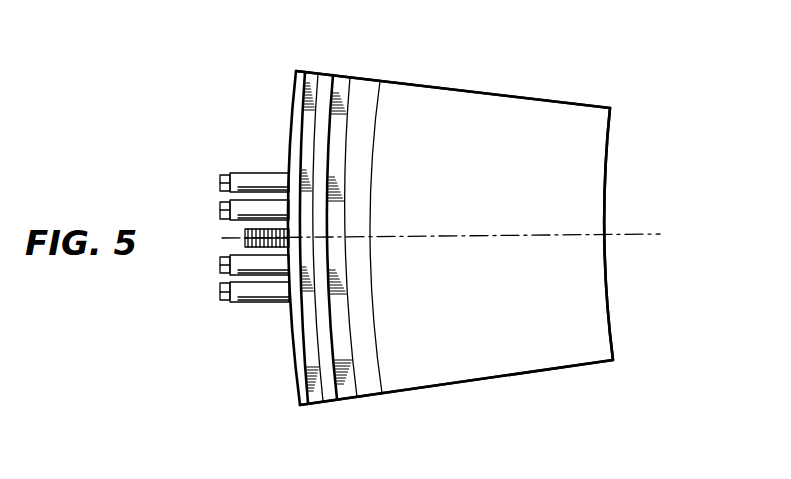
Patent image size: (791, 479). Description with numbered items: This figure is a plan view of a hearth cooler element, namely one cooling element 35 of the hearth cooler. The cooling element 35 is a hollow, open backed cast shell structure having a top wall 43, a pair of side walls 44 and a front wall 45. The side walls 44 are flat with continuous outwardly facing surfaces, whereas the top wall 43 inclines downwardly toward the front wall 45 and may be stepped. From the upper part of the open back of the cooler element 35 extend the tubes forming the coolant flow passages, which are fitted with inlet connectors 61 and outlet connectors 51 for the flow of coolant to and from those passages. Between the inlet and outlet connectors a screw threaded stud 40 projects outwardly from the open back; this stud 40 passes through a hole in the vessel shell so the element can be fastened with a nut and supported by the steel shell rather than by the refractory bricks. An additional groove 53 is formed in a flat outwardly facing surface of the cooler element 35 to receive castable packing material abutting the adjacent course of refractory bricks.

The cooling element 35 is at (652, 128).
The screw threaded stud 40 is at (262, 230).
The top wall 43 is at (418, 140).
The side walls 44 is at (448, 83).
The front wall 45 is at (605, 285).
The outlet connectors 51 is at (226, 265).
The groove 53 is at (337, 318).
The inlet connectors 61 is at (225, 210).